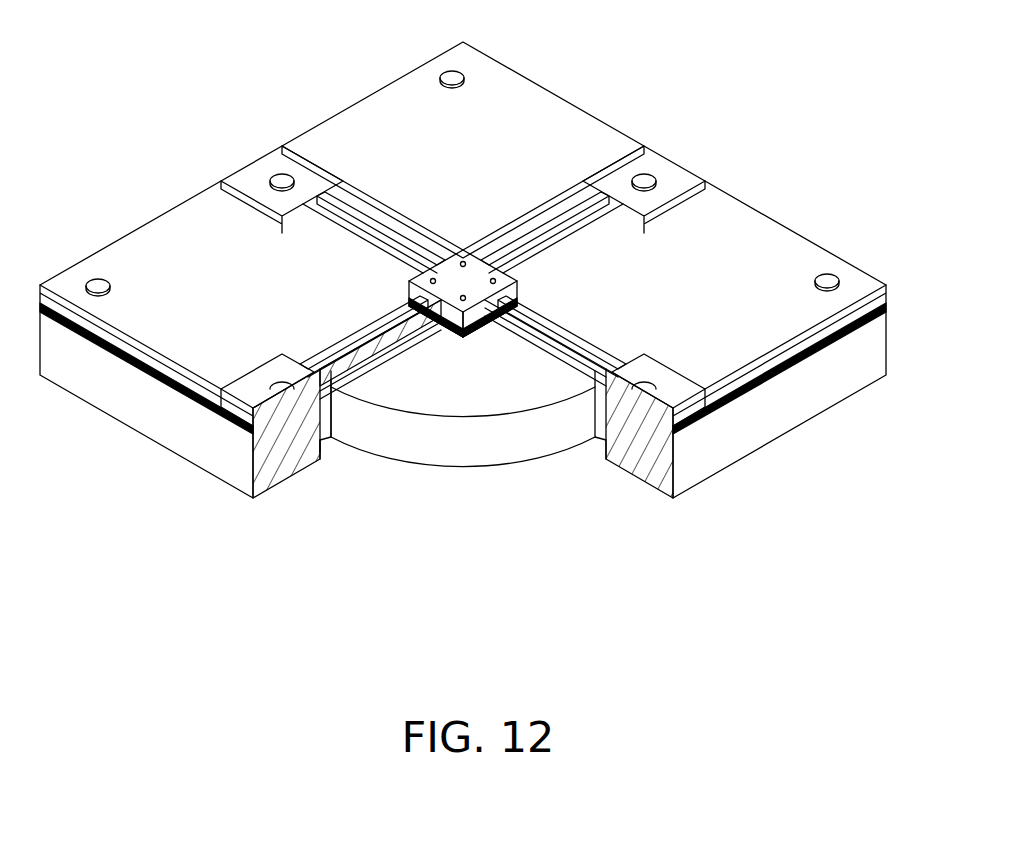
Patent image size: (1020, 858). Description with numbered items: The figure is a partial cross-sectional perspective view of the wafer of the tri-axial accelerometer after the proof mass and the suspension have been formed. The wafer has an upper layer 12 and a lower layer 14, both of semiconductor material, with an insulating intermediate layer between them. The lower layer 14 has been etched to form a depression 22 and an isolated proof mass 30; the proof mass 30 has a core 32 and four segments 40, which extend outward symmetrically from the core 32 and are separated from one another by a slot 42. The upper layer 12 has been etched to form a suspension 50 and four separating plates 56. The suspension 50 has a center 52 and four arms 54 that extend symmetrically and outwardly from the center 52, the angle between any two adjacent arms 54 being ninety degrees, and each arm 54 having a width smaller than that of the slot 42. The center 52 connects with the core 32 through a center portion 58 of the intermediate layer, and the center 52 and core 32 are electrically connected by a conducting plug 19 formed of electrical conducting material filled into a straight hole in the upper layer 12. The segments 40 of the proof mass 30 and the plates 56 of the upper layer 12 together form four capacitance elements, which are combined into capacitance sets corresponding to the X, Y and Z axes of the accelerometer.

The upper layer 12 is at (507, 113).
The lower layer 14 is at (165, 452).
The conducting plug 19 is at (465, 254).
The depression 22 is at (321, 453).
The proof mass 30 is at (531, 466).
The core 32 is at (437, 327).
The segments 40 is at (493, 450).
The slot 42 is at (330, 438).
The suspension 50 is at (471, 288).
The center 52 is at (487, 332).
The arms 54 is at (358, 212).
The separating plates 56 is at (398, 116).
The center portion 58 is at (462, 327).